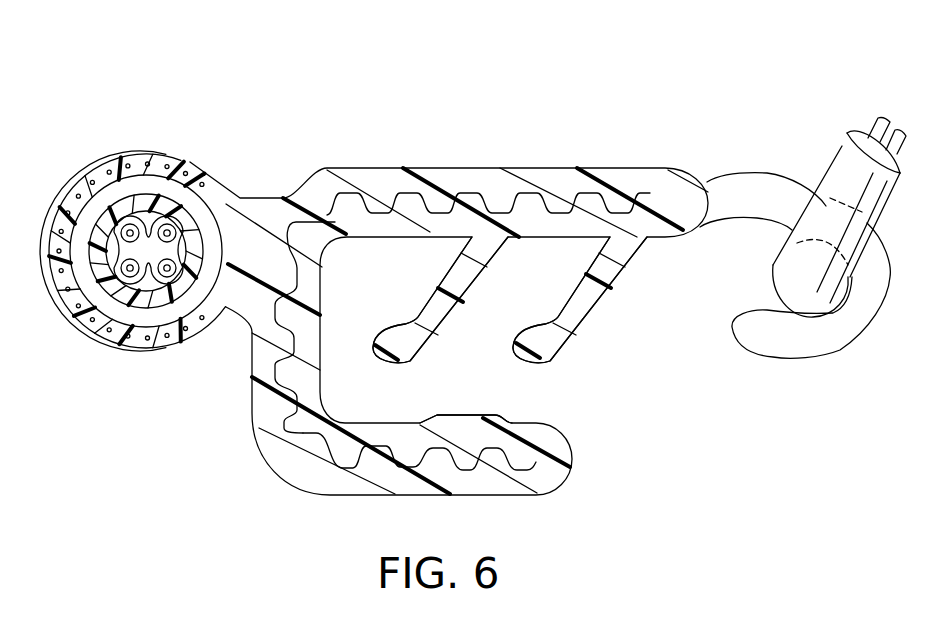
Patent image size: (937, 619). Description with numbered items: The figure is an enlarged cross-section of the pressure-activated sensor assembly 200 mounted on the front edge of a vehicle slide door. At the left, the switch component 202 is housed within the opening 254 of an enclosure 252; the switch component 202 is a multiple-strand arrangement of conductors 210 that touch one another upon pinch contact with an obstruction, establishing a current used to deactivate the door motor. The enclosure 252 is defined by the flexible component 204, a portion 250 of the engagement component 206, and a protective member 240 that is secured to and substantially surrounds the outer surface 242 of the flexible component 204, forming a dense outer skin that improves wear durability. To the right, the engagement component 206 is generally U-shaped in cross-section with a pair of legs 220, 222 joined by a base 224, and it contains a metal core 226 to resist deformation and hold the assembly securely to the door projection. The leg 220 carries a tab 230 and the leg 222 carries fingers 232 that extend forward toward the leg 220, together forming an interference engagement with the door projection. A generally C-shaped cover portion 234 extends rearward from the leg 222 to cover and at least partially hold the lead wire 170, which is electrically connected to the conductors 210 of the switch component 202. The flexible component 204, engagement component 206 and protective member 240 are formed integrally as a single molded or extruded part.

The pressure-activated sensor assembly 200 is at (78, 133).
The outer surface 242 is at (93, 163).
The flexible component 204 is at (130, 160).
The portion of the engagement member 250 is at (200, 167).
The conductors 210 is at (180, 220).
The opening 254 is at (213, 222).
The metal core 226 is at (390, 168).
The engagement component 206 is at (480, 167).
The leg 222 is at (563, 168).
The cover portion 234 is at (745, 192).
The lead wire 170 is at (828, 165).
The fingers 232 is at (580, 302).
The tab 230 is at (467, 413).
The leg 220 is at (487, 483).
The protective member 240 is at (57, 325).
The switch component 202 is at (110, 330).
The enclosure 252 is at (143, 360).
The base 224 is at (263, 358).